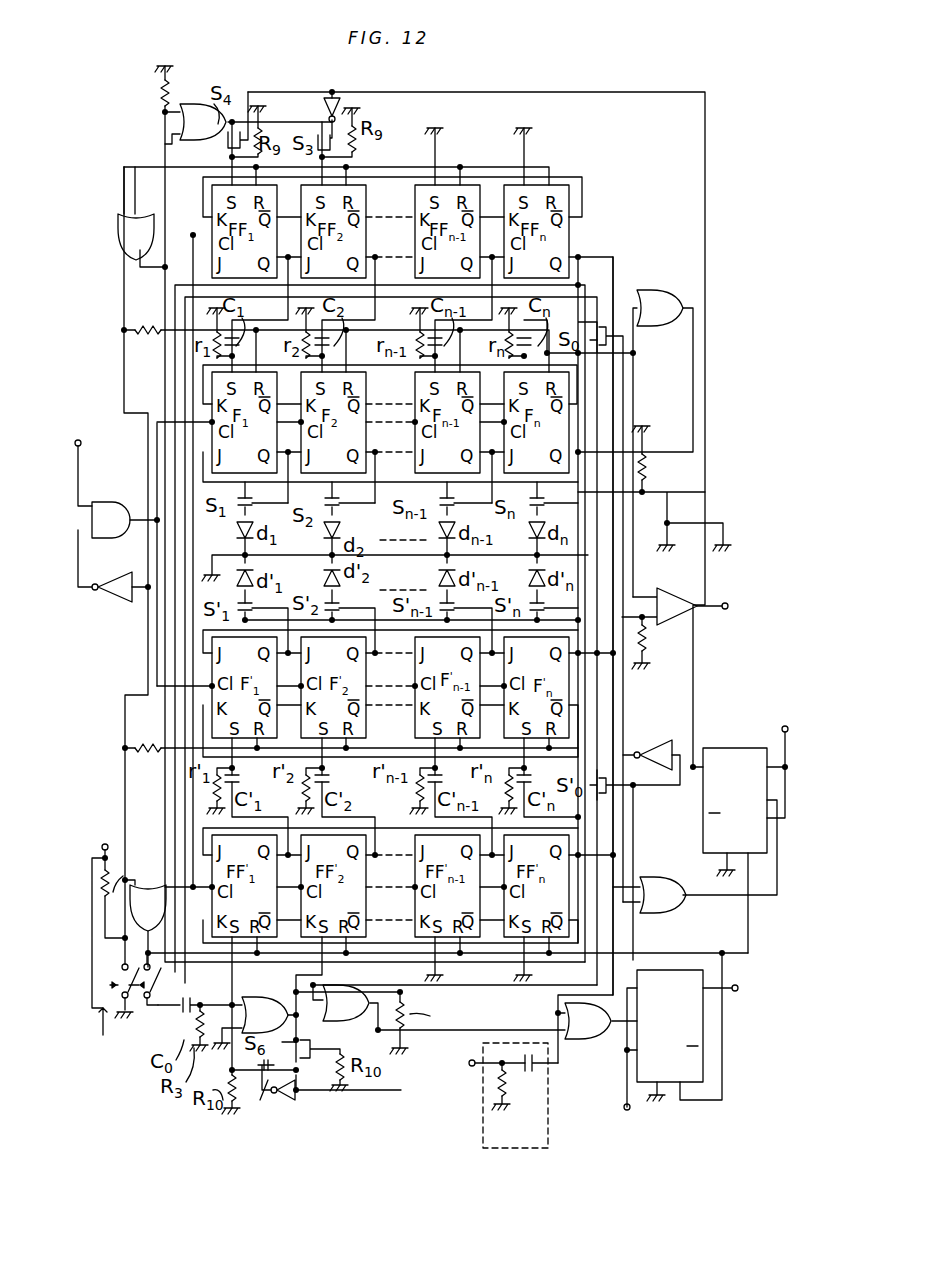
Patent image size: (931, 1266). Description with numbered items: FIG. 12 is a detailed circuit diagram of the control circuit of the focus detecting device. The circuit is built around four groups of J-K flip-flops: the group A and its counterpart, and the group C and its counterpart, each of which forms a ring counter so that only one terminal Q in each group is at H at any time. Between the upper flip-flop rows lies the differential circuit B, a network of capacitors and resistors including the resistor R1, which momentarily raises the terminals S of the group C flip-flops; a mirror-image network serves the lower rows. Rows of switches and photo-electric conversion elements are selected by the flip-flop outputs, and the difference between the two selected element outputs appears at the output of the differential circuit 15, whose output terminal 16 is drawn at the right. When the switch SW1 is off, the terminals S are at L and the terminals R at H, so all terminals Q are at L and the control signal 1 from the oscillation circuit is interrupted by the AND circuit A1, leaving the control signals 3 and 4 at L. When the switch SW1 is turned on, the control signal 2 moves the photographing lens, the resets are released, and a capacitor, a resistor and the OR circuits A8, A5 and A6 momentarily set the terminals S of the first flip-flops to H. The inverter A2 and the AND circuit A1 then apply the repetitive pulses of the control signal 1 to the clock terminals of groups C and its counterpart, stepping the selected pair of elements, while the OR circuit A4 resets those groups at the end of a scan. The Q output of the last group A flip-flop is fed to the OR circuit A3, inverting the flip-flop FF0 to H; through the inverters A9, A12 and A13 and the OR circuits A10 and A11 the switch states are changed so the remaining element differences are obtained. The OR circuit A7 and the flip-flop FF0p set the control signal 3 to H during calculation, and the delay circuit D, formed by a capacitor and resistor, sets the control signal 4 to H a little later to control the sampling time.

The control signal 1 is at (78, 456).
The control signal 2 is at (103, 1034).
The control signal 3 is at (737, 988).
The control signal 4 is at (480, 1063).
The differential circuit 15 is at (666, 601).
The output terminal 16 is at (717, 590).
The ring counter A is at (575, 238).
The differential circuit B is at (592, 304).
The ring counter C is at (580, 426).
The delay circuit D is at (554, 1096).
The AND circuit A1 is at (117, 554).
The inverter circuit A2 is at (120, 587).
The OR circuit A3 is at (649, 895).
The OR circuit A4 is at (636, 443).
The OR circuit A5 is at (248, 124).
The OR circuit A6 is at (455, 1007).
The OR circuit A7 is at (597, 660).
The OR circuit A8 is at (269, 1015).
The inverter circuit A9 is at (651, 850).
The OR circuit A10 is at (141, 217).
The OR circuit A11 is at (148, 926).
The inverter circuit A12 is at (317, 106).
The inverter circuit A13 is at (277, 1096).
The J-K flip-flop FF0 is at (741, 827).
The J-K flip-flop FF0p is at (663, 1046).
The resistor R1 is at (117, 913).
The switch SW1 is at (143, 993).